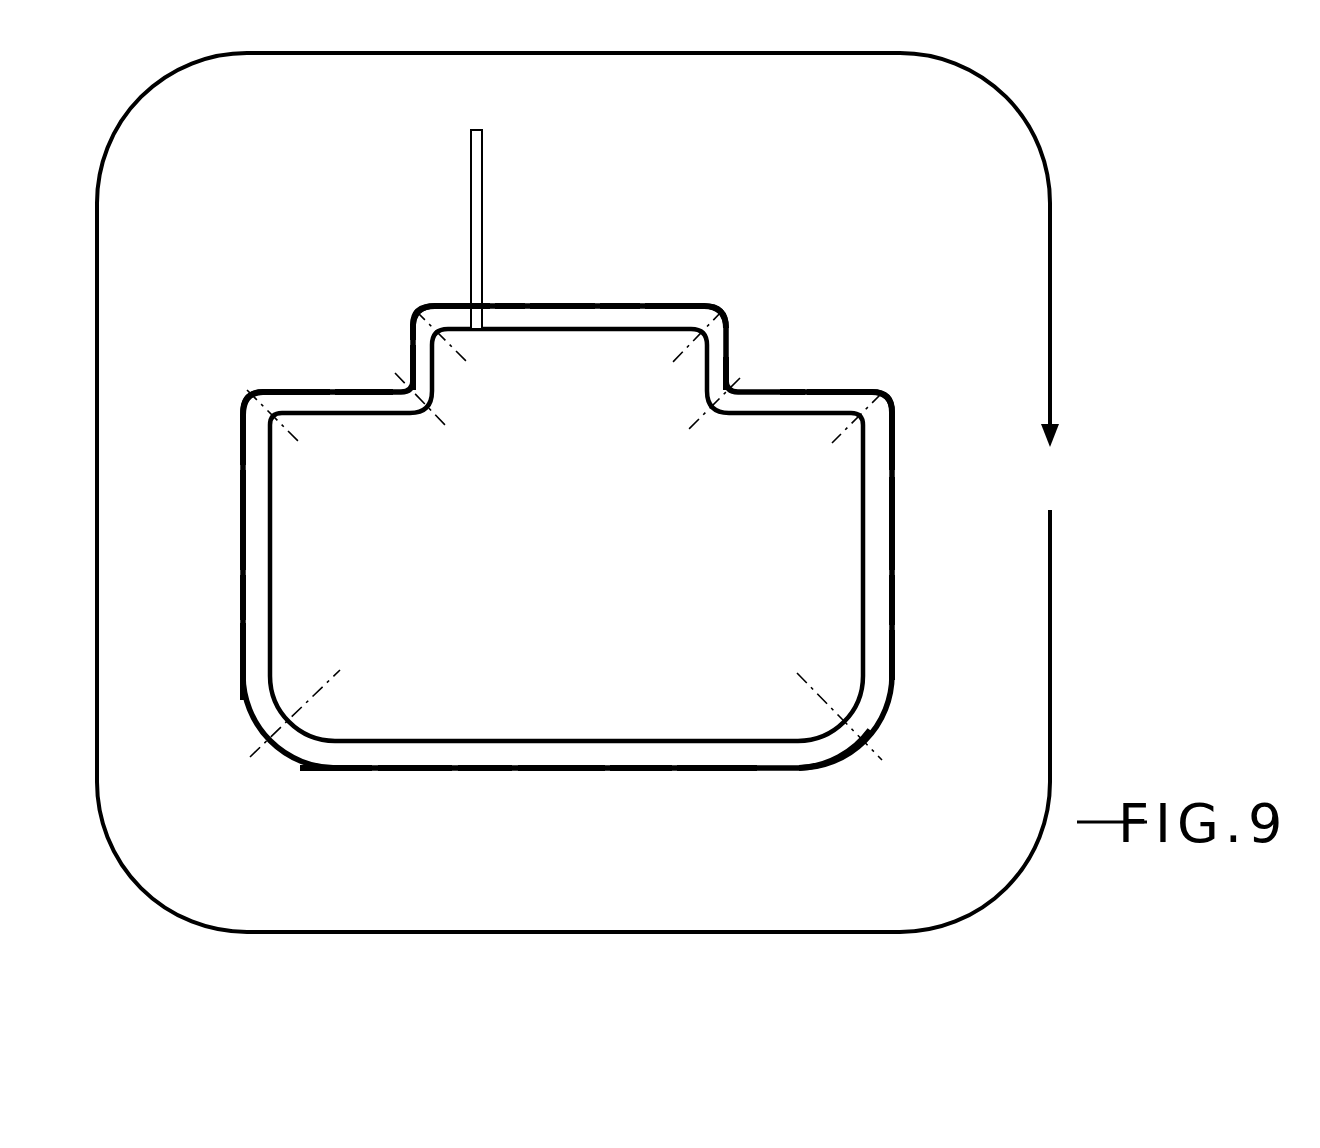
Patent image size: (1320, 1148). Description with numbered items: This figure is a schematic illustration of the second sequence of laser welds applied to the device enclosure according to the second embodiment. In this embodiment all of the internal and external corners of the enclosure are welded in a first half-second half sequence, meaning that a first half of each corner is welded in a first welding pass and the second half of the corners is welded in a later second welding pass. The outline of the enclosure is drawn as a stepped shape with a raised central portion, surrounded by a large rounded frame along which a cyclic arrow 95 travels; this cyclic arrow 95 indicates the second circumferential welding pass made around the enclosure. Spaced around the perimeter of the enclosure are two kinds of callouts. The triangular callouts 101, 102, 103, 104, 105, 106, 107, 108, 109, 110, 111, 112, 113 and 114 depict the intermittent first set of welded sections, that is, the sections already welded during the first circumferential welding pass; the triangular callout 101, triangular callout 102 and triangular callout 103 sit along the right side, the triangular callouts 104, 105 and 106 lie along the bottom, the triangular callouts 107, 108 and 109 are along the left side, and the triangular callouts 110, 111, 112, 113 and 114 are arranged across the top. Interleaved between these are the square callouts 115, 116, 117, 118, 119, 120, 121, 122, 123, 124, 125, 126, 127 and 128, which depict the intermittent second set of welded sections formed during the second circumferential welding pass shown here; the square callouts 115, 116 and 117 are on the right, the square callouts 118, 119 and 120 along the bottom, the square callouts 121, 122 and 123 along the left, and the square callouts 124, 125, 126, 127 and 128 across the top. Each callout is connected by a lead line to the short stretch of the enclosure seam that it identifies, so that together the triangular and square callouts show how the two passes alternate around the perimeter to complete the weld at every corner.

The cyclic arrow 95 is at (1025, 865).
The triangular callout 101 is at (848, 388).
The triangular callout 102 is at (893, 512).
The triangular callout 103 is at (893, 670).
The triangular callout 104 is at (733, 770).
The triangular callout 105 is at (567, 770).
The triangular callout 106 is at (420, 770).
The triangular callout 107 is at (243, 690).
The triangular callout 108 is at (243, 522).
The triangular callout 109 is at (265, 390).
The triangular callout 110 is at (410, 365).
The triangular callout 111 is at (458, 303).
The triangular callout 112 is at (567, 305).
The triangular callout 113 is at (673, 305).
The triangular callout 114 is at (778, 390).
The square callout 115 is at (893, 430).
The square callout 116 is at (893, 603).
The square callout 117 is at (837, 765).
The square callout 118 is at (644, 770).
The square callout 119 is at (490, 770).
The square callout 120 is at (300, 768).
The square callout 121 is at (243, 597).
The square callout 122 is at (243, 432).
The square callout 123 is at (360, 392).
The square callout 124 is at (413, 320).
The square callout 125 is at (508, 306).
The square callout 126 is at (619, 306).
The square callout 127 is at (727, 372).
The square callout 128 is at (792, 388).